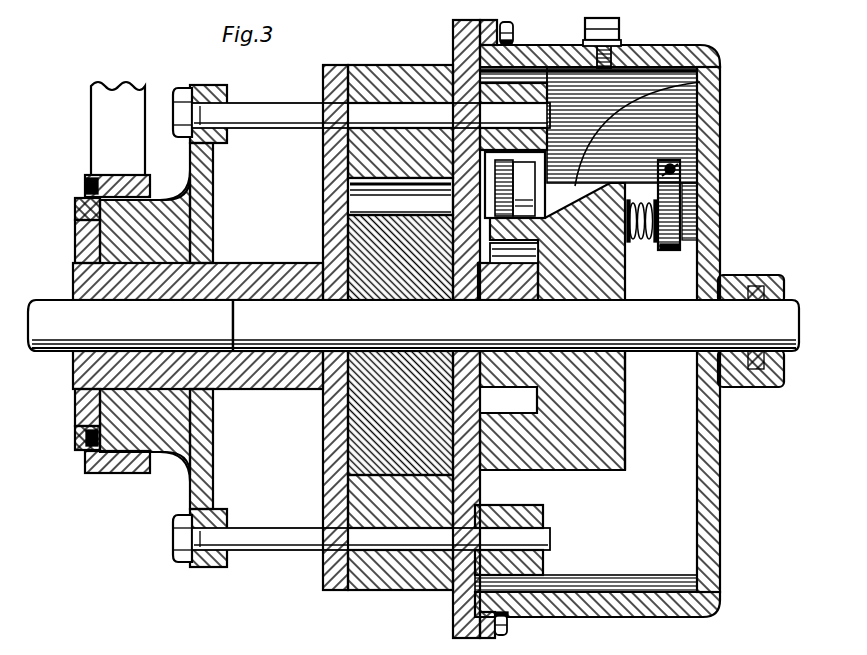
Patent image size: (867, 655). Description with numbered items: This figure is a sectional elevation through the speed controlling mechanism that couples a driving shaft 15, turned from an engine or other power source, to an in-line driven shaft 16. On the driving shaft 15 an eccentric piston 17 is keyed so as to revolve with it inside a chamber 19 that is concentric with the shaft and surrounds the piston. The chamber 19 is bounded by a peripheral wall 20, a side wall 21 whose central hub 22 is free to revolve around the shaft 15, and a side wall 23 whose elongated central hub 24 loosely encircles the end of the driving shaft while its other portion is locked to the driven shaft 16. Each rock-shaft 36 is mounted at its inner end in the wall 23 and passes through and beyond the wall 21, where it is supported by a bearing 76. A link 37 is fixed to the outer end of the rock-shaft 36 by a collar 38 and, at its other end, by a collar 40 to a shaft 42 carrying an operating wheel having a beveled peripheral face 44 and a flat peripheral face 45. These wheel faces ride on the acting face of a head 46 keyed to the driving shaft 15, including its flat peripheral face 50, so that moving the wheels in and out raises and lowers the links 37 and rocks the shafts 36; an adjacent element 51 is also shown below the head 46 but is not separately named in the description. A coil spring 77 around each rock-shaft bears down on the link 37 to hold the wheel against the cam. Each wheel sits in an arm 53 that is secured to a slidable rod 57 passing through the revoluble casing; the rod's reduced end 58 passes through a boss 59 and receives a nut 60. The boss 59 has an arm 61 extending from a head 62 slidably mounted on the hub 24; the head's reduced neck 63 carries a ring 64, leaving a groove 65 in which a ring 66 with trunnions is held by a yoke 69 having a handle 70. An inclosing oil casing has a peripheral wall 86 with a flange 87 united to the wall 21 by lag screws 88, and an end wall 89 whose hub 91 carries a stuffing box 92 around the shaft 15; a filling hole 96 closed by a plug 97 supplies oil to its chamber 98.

The driving shaft 15 is at (415, 325).
The driven shaft 16 is at (130, 325).
The piston 17 is at (352, 236).
The chamber 19 is at (400, 197).
The peripheral wall 20 is at (394, 68).
The side wall 21 is at (455, 64).
The central hub 22 is at (508, 282).
The side wall 23 is at (323, 182).
The elongated central hub 24 is at (245, 272).
The rock-shaft 36 is at (672, 250).
The link 37 is at (680, 208).
The collar 38 is at (680, 233).
The collar 40 is at (680, 170).
The shaft 42 is at (635, 186).
The beveled peripheral face 44 is at (514, 213).
The flat peripheral face 45 is at (515, 185).
The head 46 is at (700, 82).
The flat peripheral face 50 is at (612, 182).
The hub body 51 is at (580, 472).
The arm 53 is at (542, 88).
The slidable rod 57 is at (570, 540).
The reduced end 58 is at (222, 117).
The boss 59 is at (222, 92).
The nut 60 is at (184, 90).
The arm 61 is at (213, 170).
The head 62 is at (183, 204).
The neck 63 is at (88, 240).
The ring 64 is at (75, 210).
The groove 65 is at (85, 190).
The ring 66 is at (88, 178).
The yoke 69 is at (178, 192).
The handle 70 is at (118, 128).
The bearing 76 is at (656, 242).
The coil spring 77 is at (645, 242).
The peripheral wall 86 is at (690, 52).
The flange 87 is at (508, 28).
The lag screws 88 is at (513, 35).
The end wall 89 is at (722, 180).
The hub 91 is at (736, 282).
The stuffing box 92 is at (758, 320).
The filling hole 96 is at (636, 48).
The plug 97 is at (622, 44).
The chamber 98 is at (653, 410).